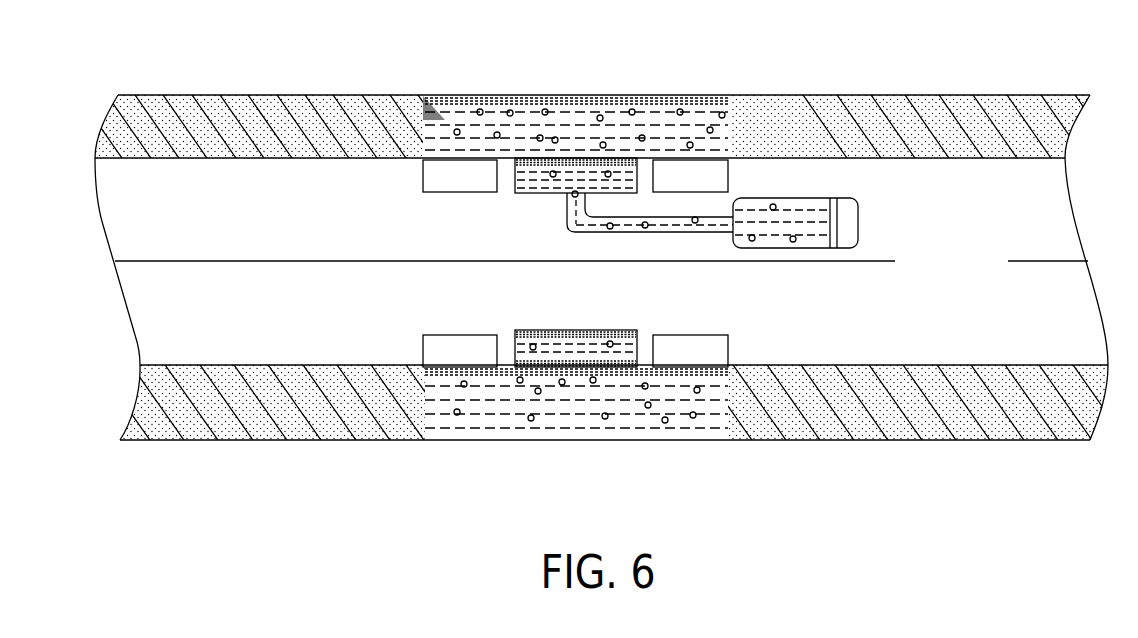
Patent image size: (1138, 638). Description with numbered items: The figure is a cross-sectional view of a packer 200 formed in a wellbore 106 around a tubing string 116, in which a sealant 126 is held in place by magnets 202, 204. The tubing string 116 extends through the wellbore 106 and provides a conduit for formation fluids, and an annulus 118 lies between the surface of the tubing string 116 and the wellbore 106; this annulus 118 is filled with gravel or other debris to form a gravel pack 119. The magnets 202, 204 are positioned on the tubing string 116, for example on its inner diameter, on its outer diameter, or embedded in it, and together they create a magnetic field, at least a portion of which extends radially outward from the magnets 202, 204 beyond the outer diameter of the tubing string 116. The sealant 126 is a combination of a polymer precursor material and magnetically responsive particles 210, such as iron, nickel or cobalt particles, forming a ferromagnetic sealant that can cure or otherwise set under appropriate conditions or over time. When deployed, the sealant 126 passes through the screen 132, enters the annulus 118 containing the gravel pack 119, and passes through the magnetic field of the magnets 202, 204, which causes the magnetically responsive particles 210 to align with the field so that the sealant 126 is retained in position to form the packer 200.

The wellbore 106 is at (238, 95).
The tubing string 116 is at (172, 150).
The annulus 118 is at (816, 112).
The gravel pack 119 is at (223, 422).
The sealant 126 is at (433, 422).
The screen 132 is at (630, 378).
The packer 200 is at (428, 100).
The magnet 202 is at (460, 168).
The magnet 204 is at (698, 168).
The magnetically responsive particles 210 is at (545, 110).